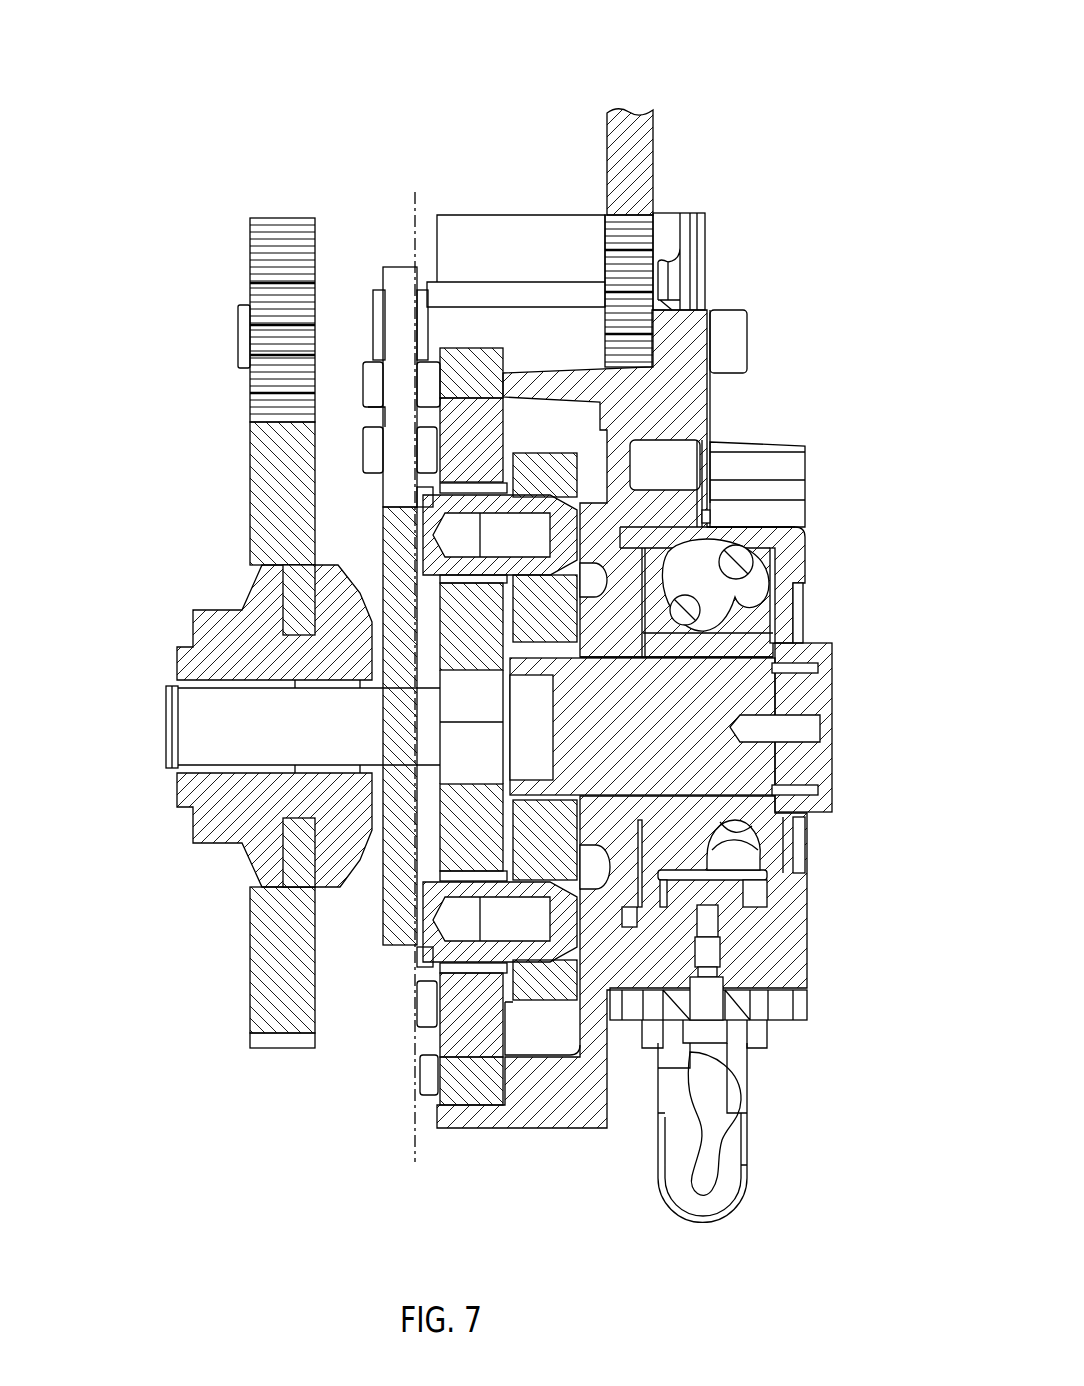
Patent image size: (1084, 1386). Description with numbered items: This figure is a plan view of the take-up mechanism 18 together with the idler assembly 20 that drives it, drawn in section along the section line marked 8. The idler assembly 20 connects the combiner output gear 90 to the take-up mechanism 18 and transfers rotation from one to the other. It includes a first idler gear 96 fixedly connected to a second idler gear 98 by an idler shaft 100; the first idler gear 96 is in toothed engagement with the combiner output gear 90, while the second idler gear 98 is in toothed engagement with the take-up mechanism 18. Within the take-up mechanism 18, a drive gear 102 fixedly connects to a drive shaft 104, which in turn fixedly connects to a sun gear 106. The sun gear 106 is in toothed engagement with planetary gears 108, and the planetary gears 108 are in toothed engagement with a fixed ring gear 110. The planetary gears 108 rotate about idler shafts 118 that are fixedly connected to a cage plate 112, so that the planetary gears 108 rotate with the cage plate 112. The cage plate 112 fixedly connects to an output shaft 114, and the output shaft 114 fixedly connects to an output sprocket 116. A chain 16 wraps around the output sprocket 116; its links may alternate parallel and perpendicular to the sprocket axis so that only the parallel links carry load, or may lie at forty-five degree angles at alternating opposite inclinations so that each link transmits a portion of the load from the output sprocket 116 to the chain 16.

The section line 8- 8 is at (455, 1160).
The chain 16 is at (747, 1137).
The take-up mechanism 18 is at (738, 407).
The idler assembly 20 is at (250, 277).
The combiner output gear 90 is at (652, 137).
The first idler gear 96 is at (648, 222).
The second idler gear 98 is at (437, 470).
The idler shaft 100 is at (483, 307).
The drive gear 102 is at (250, 457).
The drive shaft 104 is at (267, 687).
The sun gear 106 is at (467, 667).
The planetary gears 108 is at (250, 223).
The fixed ring gear 110 is at (463, 1112).
The cage plate 112 is at (620, 985).
The output shaft 114 is at (818, 705).
The output sprocket 116 is at (782, 563).
The idler shafts 118 is at (415, 520).